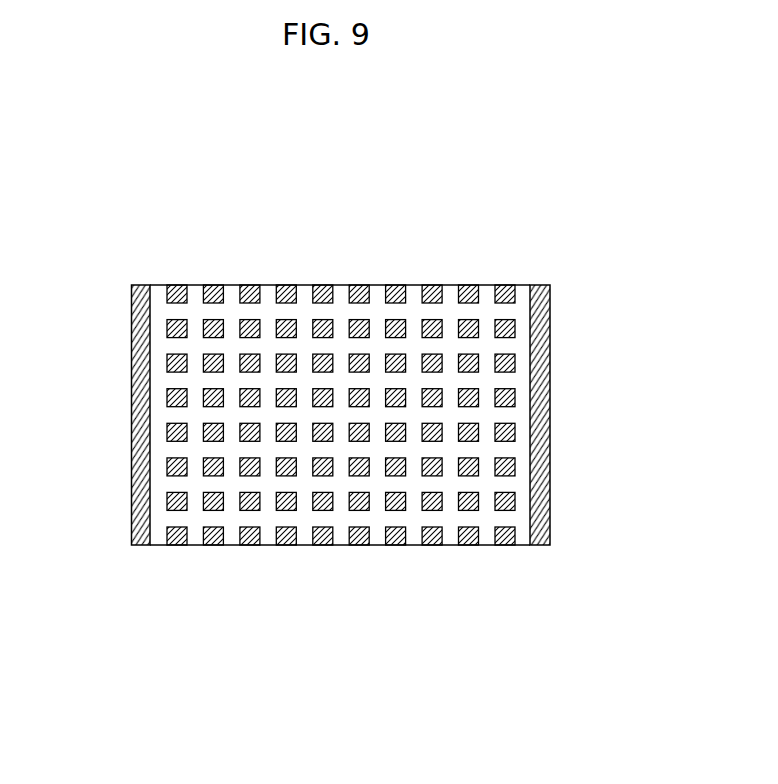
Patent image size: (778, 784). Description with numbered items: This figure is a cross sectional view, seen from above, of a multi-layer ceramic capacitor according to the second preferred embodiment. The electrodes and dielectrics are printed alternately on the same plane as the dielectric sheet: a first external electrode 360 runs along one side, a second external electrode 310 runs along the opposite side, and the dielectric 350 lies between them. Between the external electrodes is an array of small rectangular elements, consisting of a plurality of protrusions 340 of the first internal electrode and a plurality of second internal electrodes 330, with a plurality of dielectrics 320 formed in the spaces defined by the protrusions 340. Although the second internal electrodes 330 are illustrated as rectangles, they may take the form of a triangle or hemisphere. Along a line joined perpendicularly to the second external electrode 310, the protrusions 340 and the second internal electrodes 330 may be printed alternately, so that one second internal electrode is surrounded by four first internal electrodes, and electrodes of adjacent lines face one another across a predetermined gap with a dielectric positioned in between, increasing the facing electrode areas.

The second external electrode 310 is at (550, 393).
The dielectrics 320 is at (525, 538).
The second internal electrodes 330 is at (498, 545).
The protrusions of the first internal electrode 340 is at (472, 537).
The dielectric 350 is at (157, 538).
The first external electrode 360 is at (131, 383).